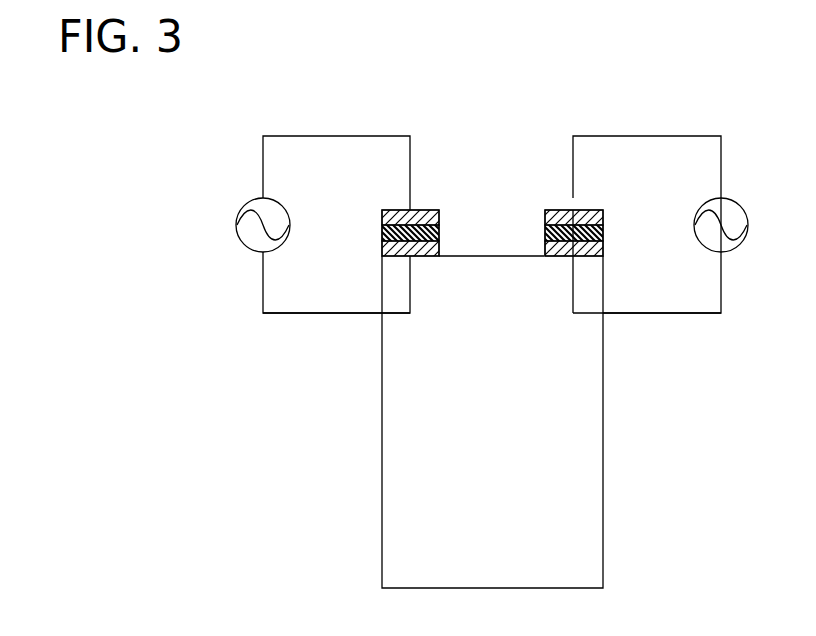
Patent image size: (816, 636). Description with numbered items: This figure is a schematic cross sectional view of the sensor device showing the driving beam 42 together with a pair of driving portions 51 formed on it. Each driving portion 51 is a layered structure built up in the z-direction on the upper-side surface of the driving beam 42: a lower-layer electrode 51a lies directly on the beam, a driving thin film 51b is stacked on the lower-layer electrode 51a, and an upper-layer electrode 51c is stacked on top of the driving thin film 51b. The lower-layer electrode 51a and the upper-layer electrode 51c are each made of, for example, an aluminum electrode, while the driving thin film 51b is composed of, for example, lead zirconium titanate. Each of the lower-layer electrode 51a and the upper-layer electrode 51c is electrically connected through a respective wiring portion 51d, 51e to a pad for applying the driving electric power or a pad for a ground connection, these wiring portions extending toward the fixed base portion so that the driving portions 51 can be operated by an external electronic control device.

The driving beam 42 is at (380, 453).
The driving portion 51 is at (388, 207).
The lower-layer electrode 51a is at (381, 247).
The driving thin film 51b is at (381, 230).
The upper-layer electrode 51c is at (381, 218).
The wiring portion 51d is at (285, 136).
The wiring portion 51e is at (285, 313).